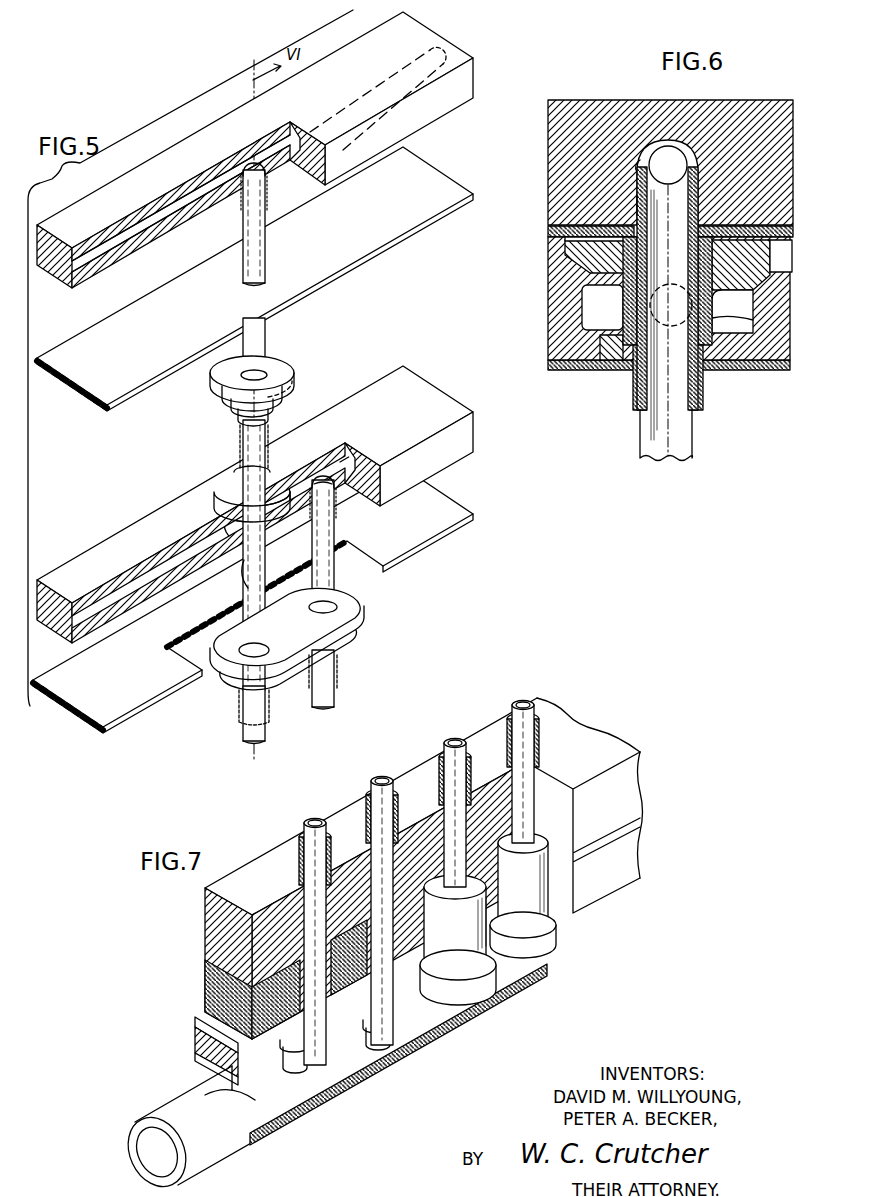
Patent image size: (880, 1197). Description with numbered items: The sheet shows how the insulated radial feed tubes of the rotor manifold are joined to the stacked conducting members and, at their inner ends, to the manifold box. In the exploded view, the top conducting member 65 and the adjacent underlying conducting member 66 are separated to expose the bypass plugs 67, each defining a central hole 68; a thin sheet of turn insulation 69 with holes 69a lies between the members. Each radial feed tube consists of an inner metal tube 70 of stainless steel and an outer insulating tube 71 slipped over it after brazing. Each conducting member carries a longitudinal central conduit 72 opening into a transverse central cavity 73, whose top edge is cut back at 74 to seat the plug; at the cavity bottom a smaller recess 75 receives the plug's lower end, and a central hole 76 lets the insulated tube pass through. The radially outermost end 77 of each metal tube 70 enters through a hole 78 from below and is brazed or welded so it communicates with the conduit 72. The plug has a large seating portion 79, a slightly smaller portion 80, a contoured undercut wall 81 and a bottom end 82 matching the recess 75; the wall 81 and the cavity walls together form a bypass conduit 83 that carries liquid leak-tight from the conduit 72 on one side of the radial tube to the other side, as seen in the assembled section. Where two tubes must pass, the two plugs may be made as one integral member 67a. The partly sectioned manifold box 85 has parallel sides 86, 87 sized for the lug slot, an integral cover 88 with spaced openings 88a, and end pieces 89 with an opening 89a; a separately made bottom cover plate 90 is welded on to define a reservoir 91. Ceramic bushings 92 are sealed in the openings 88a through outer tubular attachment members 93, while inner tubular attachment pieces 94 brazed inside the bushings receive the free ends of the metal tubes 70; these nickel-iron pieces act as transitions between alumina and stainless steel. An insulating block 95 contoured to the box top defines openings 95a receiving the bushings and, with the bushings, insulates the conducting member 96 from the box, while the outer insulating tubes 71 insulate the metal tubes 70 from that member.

In FIG. 5, the top conducting member 65 is at (470, 58).
In FIG. 6, the top conducting member 65 is at (762, 110).
In FIG. 5, the underlying conducting member 66 is at (388, 380).
In FIG. 6, the underlying conducting member 66 is at (555, 297).
In FIG. 5, the bypass plug 67 is at (293, 378).
In FIG. 6, the bypass plug 67 is at (600, 262).
In FIG. 5, the integral bypass plug member 67a is at (362, 623).
In FIG. 5, the central hole 68 is at (282, 393).
In FIG. 5, the turn insulation 69 is at (431, 208).
In FIG. 6, the turn insulation 69 is at (552, 230).
In FIG. 5, the turn insulation holes 69a is at (241, 279).
In FIG. 5, the inner metal tube 70 is at (265, 210).
In FIG. 6, the inner metal tube 70 is at (699, 194).
In FIG. 7, the inner metal tube 70 is at (316, 824).
In FIG. 5, the outer insulating tube 71 is at (240, 459).
In FIG. 6, the outer insulating tube 71 is at (704, 262).
In FIG. 7, the outer insulating tube 71 is at (299, 872).
In FIG. 5, the central conduit 72 is at (172, 208).
In FIG. 6, the central conduit 72 is at (670, 148).
In FIG. 5, the central cavity 73 is at (270, 467).
In FIG. 5, the cut-back seat 74 is at (214, 486).
In FIG. 6, the cut-back seat 74 is at (567, 240).
In FIG. 5, the recess 75 is at (267, 522).
In FIG. 6, the recess 75 is at (603, 352).
In FIG. 5, the central hole 76 is at (244, 562).
In FIG. 6, the central hole 76 is at (626, 366).
In FIG. 5, the radially outermost end 77 is at (257, 162).
In FIG. 6, the radially outermost end 77 is at (642, 168).
In FIG. 5, the hole 78 is at (333, 492).
In FIG. 6, the hole 78 is at (640, 198).
In FIG. 6, the seating portion 79 is at (779, 260).
In FIG. 5, the smaller diameter portion 80 is at (222, 414).
In FIG. 6, the smaller diameter portion 80 is at (752, 282).
In FIG. 6, the contoured undercut wall 81 is at (715, 330).
In FIG. 5, the bottom end 82 is at (236, 442).
In FIG. 6, the bottom end 82 is at (708, 362).
In FIG. 6, the bypass conduit 83 is at (611, 318).
In FIG. 7, the manifold box 85 is at (435, 1080).
In FIG. 7, the side 86 is at (625, 912).
In FIG. 7, the side 87 is at (205, 905).
In FIG. 7, the integral cover 88 is at (198, 1048).
In FIG. 7, the spaced openings 88a is at (545, 873).
In FIG. 7, the end pieces 89 is at (205, 1068).
In FIG. 7, the opening 89a is at (238, 1112).
In FIG. 7, the bottom cover plate 90 is at (487, 1006).
In FIG. 7, the reservoir 91 is at (372, 1063).
In FIG. 7, the ceramic bushing 92 is at (445, 998).
In FIG. 7, the outer tubular attachment member 93 is at (430, 937).
In FIG. 7, the inner tubular attachment piece 94 is at (398, 1012).
In FIG. 7, the insulating block 95 is at (210, 985).
In FIG. 7, the spaced openings 95a is at (432, 905).
In FIG. 7, the conducting member 96 is at (215, 935).